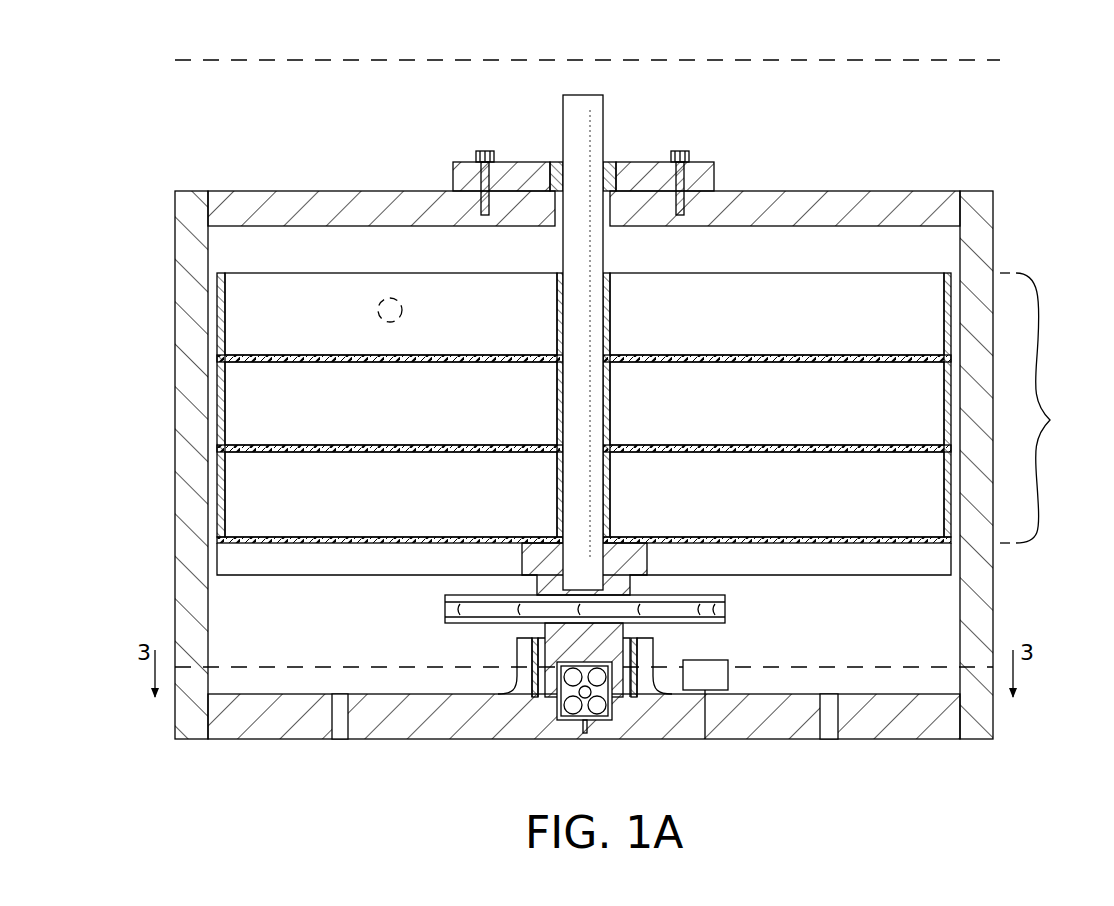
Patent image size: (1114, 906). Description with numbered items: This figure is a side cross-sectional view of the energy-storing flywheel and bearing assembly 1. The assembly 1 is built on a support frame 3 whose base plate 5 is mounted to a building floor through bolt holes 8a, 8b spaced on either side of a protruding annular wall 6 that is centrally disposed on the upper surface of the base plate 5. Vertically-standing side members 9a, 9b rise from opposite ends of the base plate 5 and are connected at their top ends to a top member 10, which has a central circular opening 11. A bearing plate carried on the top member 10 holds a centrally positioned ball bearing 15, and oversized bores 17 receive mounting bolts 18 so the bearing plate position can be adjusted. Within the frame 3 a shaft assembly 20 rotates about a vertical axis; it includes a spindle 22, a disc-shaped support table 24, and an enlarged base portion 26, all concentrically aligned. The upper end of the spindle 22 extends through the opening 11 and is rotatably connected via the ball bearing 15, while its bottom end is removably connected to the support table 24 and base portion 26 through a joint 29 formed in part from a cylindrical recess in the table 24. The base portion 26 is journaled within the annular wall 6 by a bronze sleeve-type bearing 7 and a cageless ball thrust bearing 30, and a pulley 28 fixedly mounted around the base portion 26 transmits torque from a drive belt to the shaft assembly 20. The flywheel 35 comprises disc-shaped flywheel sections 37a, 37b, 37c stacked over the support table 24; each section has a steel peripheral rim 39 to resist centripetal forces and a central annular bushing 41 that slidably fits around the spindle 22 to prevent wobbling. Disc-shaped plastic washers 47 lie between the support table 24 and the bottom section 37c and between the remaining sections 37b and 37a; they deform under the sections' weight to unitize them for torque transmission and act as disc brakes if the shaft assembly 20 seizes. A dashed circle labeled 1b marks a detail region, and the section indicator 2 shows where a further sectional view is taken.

The flywheel and bearing assembly 1 is at (112, 100).
The inlet opening 1b is at (385, 298).
The section line 2- 2 is at (155, 90).
The support frame 3 is at (584, 167).
The base plate 5 is at (248, 735).
The protruding annular wall 6 is at (520, 660).
The bearing 7 is at (532, 650).
The bolt hole 8a is at (342, 735).
The bolt hole 8b is at (830, 735).
The side member 9a is at (205, 200).
The side member 9b is at (978, 200).
The top member 10 is at (335, 200).
The central circular opening 11 is at (603, 212).
The ball bearing 15 is at (548, 170).
The bore 17 is at (462, 182).
The mounting bolt 18 is at (480, 150).
The shaft assembly 20 is at (581, 303).
The spindle 22 is at (575, 248).
The disc-shaped support table 24 is at (785, 570).
The enlarged base portion 26 is at (610, 626).
The pulley 28 is at (718, 610).
The joint 29 is at (540, 552).
The cageless ball thrust bearing 30 is at (560, 700).
The flywheel 35 is at (1040, 408).
The flywheel section 37a is at (584, 314).
The flywheel section 37b is at (584, 403).
The flywheel section 37c is at (584, 494).
The peripheral rim 39 is at (945, 290).
The central annular bushing 41 is at (620, 300).
The disc-shaped washer 47 is at (395, 530).